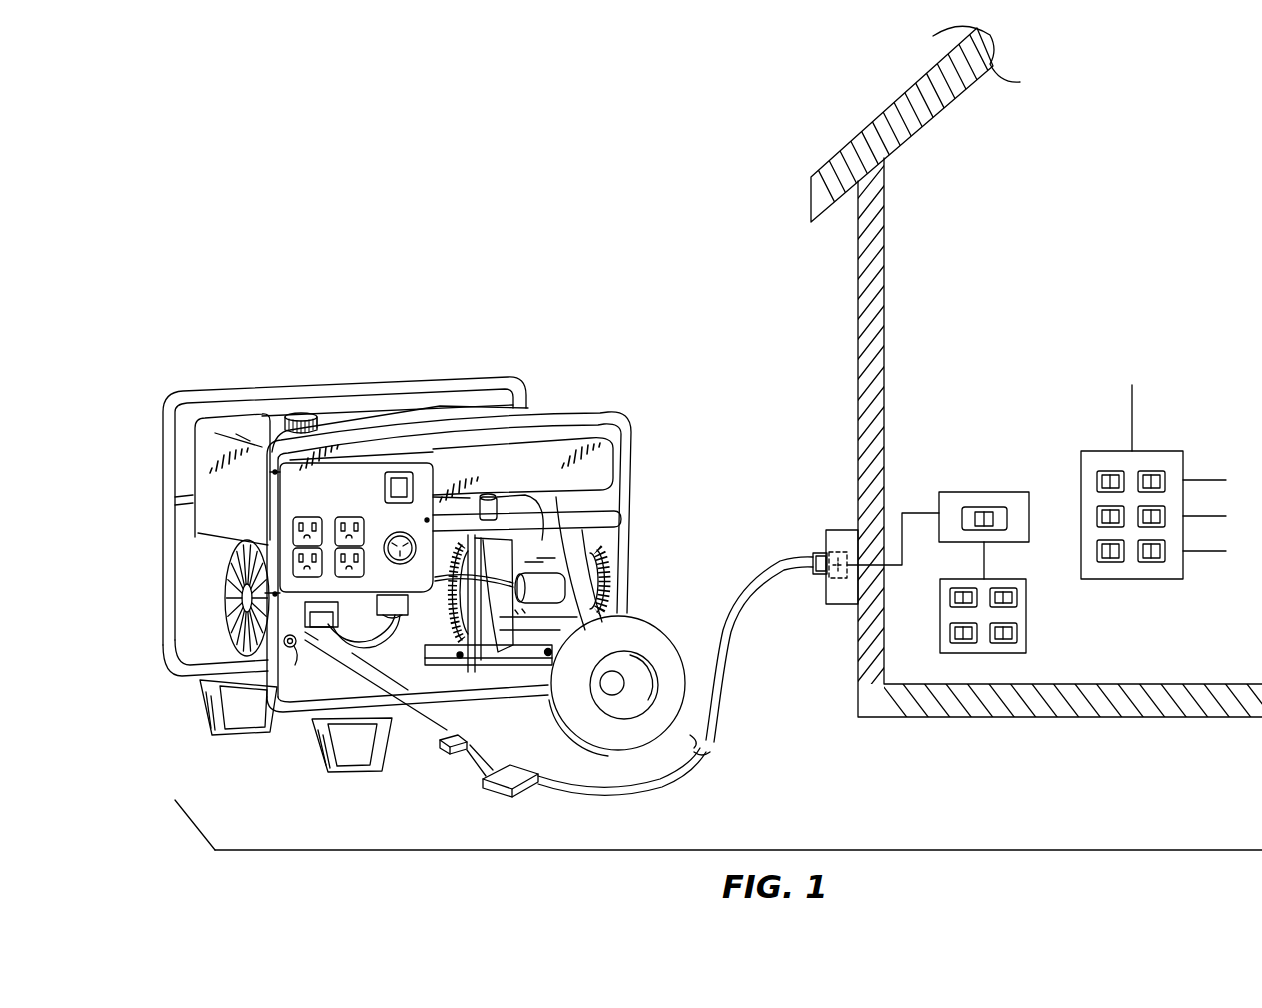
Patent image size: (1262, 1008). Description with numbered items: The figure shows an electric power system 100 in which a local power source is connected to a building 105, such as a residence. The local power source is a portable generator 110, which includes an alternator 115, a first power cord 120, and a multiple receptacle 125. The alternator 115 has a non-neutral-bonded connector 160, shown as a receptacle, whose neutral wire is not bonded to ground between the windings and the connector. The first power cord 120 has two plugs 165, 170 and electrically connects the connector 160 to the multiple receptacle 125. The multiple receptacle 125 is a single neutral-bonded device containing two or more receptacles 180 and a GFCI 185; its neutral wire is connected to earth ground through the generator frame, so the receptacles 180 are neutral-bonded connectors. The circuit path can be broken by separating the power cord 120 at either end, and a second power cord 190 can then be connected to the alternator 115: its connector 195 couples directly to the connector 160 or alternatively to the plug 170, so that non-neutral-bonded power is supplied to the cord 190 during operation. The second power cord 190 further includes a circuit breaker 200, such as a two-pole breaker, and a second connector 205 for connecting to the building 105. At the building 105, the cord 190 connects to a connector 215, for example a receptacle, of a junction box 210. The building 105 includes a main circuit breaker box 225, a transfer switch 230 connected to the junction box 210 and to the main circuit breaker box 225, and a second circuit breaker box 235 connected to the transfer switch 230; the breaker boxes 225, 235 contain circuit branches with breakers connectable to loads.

The electric power system 100 is at (594, 256).
The building 105 is at (877, 124).
The portable generator 110 is at (531, 411).
The alternator 115 is at (305, 632).
The first power cord 120 is at (328, 624).
The multiple receptacle 125 is at (367, 477).
The connector 160 is at (322, 603).
The plug 165 is at (286, 632).
The plug 170 is at (430, 697).
The receptacles 180 is at (397, 535).
The GFCI 185 is at (415, 484).
The second power cord 190 is at (655, 790).
The connector 195 is at (452, 756).
The circuit breaker 200 is at (490, 797).
The second connector 205 is at (812, 556).
The junction box 210 is at (841, 530).
The connector 215 is at (827, 593).
The main circuit breaker box 225 is at (1151, 451).
The transfer switch 230 is at (978, 492).
The second circuit breaker box 235 is at (1026, 610).